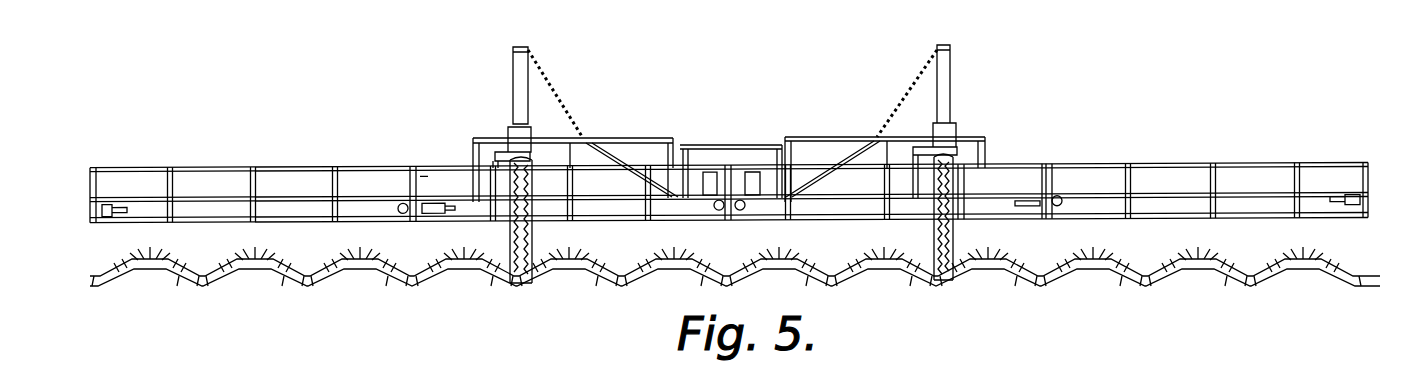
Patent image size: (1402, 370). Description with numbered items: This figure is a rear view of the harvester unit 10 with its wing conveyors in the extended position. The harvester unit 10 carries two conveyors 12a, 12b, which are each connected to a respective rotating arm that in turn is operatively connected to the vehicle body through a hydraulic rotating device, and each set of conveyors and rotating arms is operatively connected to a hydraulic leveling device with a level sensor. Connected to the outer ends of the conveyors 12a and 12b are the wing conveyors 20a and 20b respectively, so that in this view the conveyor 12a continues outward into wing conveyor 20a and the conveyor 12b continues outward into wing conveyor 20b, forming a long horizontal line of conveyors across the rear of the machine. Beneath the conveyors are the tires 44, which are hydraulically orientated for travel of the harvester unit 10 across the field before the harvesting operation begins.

The harvester unit 10 is at (735, 187).
The tires 44 is at (527, 285).
The wing conveyor 20a is at (413, 237).
The conveyor 12a is at (728, 223).
The conveyor 12b is at (1047, 223).
The wing conveyor 20b is at (1368, 223).